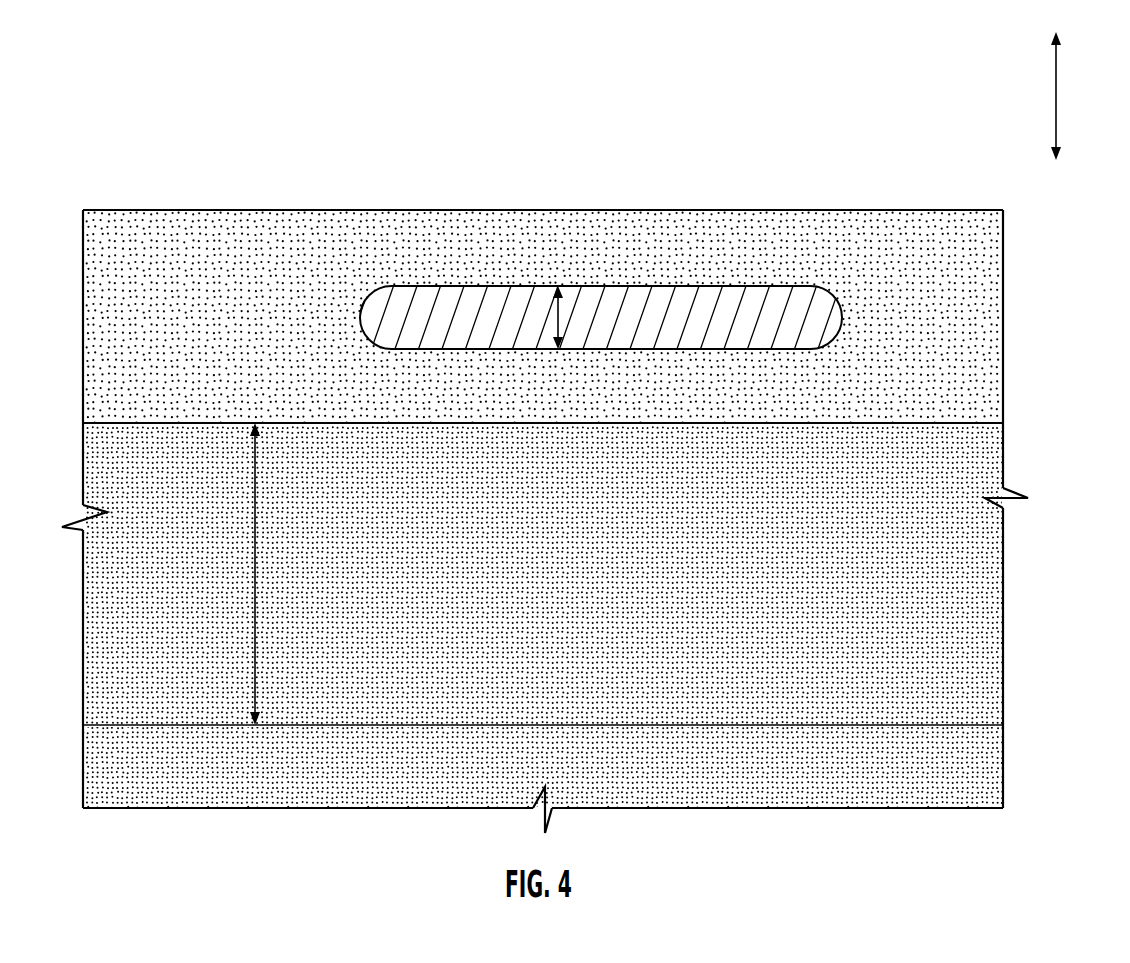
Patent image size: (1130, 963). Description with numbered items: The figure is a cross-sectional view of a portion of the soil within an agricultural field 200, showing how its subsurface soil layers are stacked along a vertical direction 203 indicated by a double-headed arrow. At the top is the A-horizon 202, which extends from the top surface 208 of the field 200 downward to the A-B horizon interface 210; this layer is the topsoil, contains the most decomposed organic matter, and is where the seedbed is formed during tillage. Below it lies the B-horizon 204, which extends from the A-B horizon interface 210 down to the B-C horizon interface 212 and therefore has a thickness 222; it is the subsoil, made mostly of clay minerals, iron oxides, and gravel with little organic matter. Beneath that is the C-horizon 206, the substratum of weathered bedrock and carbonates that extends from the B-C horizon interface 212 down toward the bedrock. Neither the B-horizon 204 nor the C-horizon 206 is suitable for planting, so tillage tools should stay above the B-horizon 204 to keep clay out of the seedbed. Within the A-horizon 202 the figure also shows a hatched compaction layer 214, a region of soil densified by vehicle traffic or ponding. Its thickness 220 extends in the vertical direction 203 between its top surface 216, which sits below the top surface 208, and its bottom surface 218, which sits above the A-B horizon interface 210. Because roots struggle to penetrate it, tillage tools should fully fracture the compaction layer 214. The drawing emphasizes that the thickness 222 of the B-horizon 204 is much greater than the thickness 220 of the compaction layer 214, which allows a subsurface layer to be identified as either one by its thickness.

The agricultural field 200 is at (234, 54).
The A-horizon 202 is at (214, 342).
The vertical direction 203 is at (1056, 97).
The B-horizon 204 is at (561, 573).
The C-horizon 206 is at (560, 768).
The top surface 208 is at (240, 210).
The A-B horizon interface 210 is at (435, 423).
The B-C horizon interface 212 is at (797, 725).
The compaction layer 214 is at (779, 276).
The top surface of the compaction layer 216 is at (675, 285).
The bottom surface of the compaction layer 218 is at (708, 349).
The thickness of the compaction layer 220 is at (555, 318).
The thickness of the B-horizon 222 is at (255, 615).